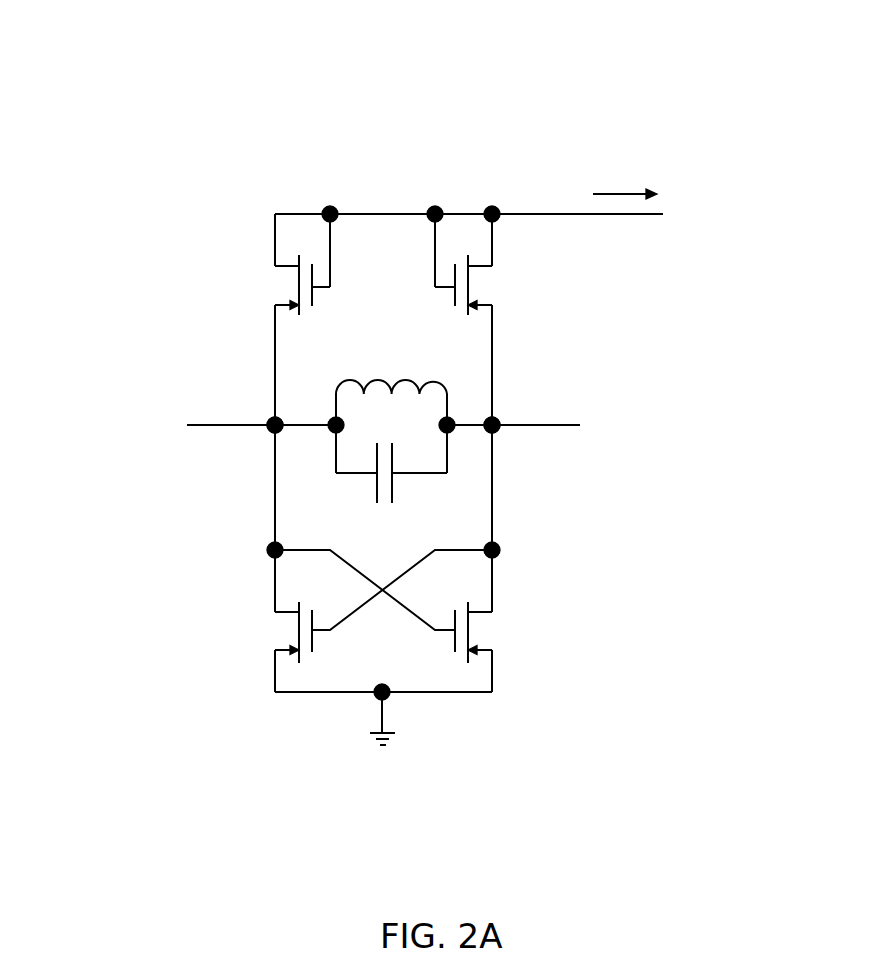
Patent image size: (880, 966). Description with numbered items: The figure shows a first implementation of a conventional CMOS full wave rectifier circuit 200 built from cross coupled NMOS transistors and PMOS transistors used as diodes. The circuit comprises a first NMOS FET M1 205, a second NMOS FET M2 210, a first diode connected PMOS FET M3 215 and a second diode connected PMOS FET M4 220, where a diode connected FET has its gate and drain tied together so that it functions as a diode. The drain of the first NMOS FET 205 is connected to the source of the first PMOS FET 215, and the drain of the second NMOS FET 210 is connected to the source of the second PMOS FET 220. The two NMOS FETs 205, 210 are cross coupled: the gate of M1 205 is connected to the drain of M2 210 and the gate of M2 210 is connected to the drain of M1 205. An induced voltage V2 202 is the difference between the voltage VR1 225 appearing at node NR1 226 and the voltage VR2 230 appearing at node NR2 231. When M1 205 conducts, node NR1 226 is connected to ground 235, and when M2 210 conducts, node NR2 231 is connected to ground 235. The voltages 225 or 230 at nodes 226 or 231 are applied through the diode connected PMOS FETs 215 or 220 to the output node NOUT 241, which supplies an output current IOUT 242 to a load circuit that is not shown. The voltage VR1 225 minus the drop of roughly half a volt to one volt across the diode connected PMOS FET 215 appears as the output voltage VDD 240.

The CMOS full wave rectifier circuit 200 is at (90, 44).
The induced voltage V2 202 is at (368, 440).
The first NMOS FET M1 205 is at (218, 628).
The second NMOS FET M2 210 is at (548, 627).
The first diode connected PMOS FET M3 215 is at (226, 283).
The second diode connected PMOS FET M4 220 is at (543, 282).
The voltage VR1 225 is at (137, 425).
The node NR1 226 is at (218, 447).
The voltage VR2 230 is at (622, 418).
The node NR2 231 is at (521, 462).
The ground 235 is at (405, 735).
The output voltage VDD 240 is at (692, 195).
The output node NOUT 241 is at (496, 165).
The output current IOUT 242 is at (607, 148).